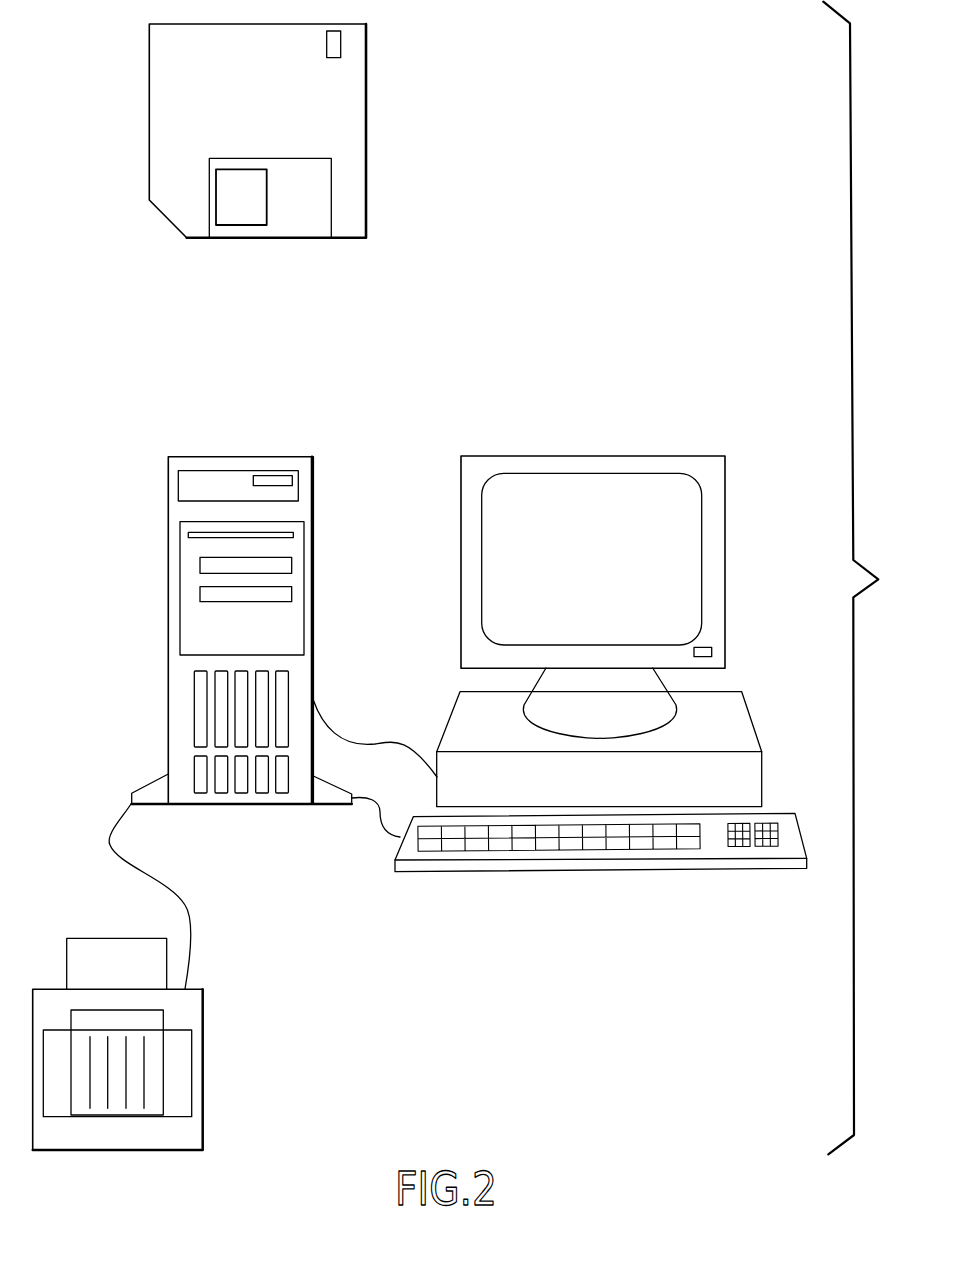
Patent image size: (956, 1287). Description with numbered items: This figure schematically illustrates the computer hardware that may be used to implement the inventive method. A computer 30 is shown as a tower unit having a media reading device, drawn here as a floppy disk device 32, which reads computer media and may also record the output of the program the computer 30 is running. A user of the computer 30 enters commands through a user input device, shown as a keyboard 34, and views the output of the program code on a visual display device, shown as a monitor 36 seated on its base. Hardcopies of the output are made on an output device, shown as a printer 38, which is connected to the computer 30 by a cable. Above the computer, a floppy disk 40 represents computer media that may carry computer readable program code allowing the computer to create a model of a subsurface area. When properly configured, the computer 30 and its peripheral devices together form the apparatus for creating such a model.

The computer 30 is at (313, 505).
The floppy disk device 32 is at (198, 532).
The keyboard 34 is at (555, 873).
The monitor 36 is at (725, 508).
The printer 38 is at (203, 1017).
The floppy disk 40 is at (366, 127).